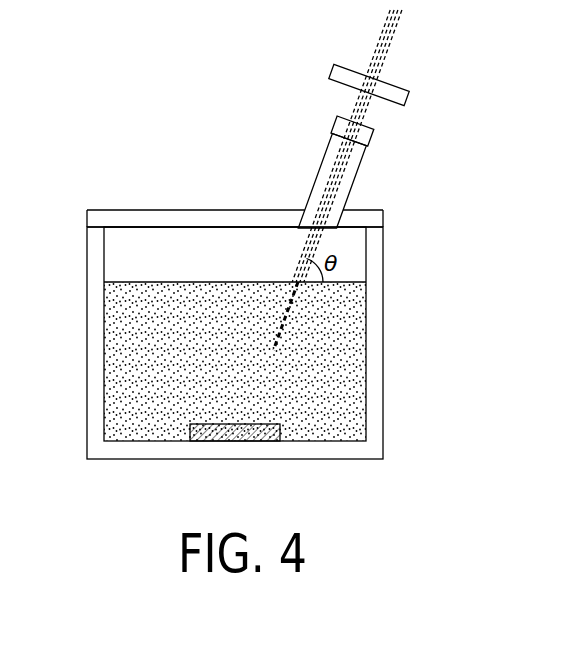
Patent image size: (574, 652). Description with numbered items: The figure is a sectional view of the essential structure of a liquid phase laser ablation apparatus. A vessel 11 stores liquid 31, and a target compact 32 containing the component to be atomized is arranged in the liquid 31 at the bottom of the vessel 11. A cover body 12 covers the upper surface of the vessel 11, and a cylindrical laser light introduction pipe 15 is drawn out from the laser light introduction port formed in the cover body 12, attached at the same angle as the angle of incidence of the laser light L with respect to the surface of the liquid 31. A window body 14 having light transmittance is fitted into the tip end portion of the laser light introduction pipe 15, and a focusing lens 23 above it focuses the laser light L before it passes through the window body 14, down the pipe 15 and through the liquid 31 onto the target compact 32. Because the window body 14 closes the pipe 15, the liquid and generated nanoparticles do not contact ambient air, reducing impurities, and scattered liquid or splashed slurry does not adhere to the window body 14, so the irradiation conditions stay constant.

The vessel 11 is at (92, 333).
The cover body 12 is at (202, 213).
The window body 14 is at (335, 126).
The laser light introduction pipe 15 is at (357, 177).
The focusing lens 23 is at (393, 83).
The liquid 31 is at (248, 400).
The target compact 32 is at (236, 442).
The laser light L is at (382, 27).